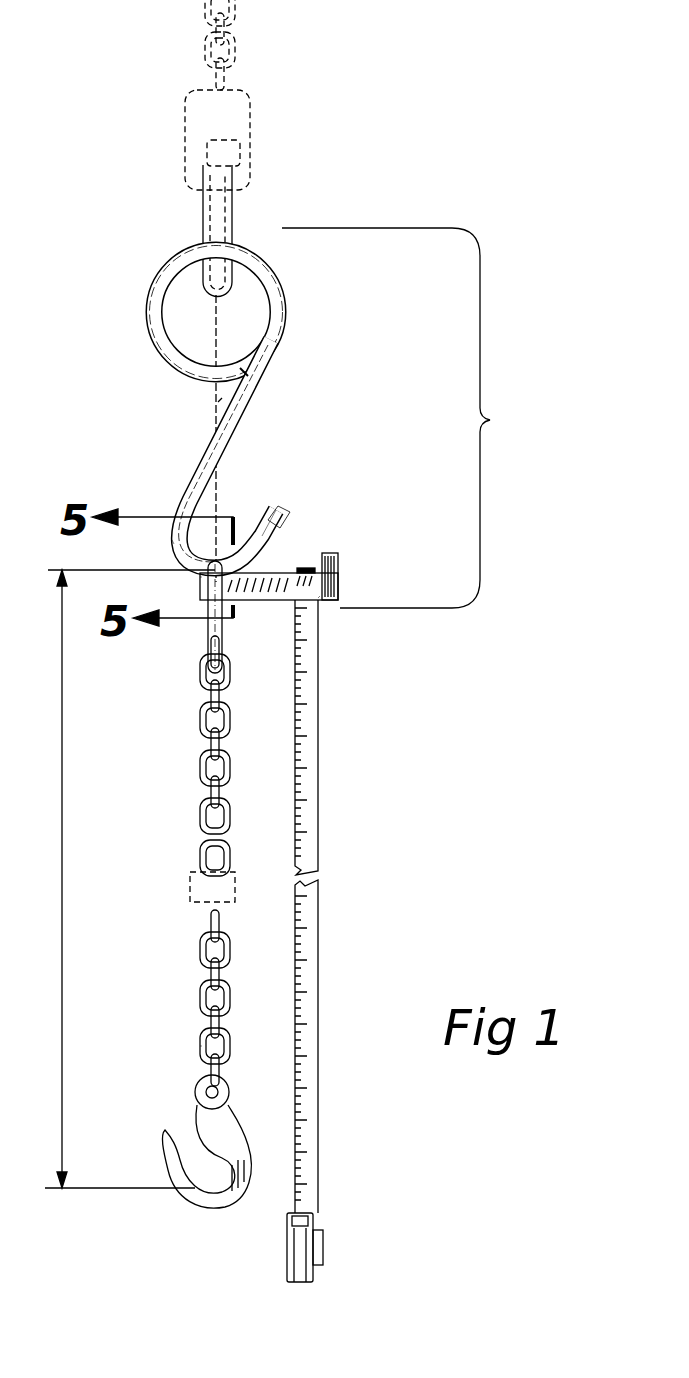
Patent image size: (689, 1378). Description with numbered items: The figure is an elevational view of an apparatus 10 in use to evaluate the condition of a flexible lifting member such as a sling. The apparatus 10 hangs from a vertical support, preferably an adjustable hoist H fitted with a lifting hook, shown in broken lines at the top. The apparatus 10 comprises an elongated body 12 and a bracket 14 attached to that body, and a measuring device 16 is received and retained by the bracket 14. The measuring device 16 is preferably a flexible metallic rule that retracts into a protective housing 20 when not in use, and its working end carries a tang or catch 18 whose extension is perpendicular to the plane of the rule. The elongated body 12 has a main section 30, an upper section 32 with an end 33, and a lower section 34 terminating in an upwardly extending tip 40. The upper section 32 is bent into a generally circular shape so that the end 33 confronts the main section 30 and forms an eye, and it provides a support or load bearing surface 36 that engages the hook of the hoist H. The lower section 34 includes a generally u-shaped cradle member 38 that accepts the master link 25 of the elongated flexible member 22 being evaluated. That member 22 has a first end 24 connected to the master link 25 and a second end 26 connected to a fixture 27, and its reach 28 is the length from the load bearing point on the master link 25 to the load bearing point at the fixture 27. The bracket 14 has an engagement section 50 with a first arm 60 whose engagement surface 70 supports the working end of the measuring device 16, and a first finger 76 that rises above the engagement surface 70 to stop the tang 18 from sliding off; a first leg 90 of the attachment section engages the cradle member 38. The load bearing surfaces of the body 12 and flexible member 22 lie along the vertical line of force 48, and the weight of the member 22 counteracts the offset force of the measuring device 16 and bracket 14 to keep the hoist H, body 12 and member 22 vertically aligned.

The hoist H is at (162, 124).
The apparatus 10 is at (520, 420).
The elongated body 12 is at (215, 415).
The bracket 14 is at (318, 588).
The measuring device 16 is at (323, 884).
The tang or catch 18 is at (306, 570).
The protective housing 20 is at (287, 1254).
The elongated flexible member 22 is at (168, 878).
The first end 24 is at (164, 922).
The master link 25 is at (206, 640).
The second end 26 is at (200, 1048).
The fixture 27 is at (156, 1170).
The reach 28 is at (127, 879).
The main section 30 is at (268, 396).
The upper section 32 is at (296, 268).
The end 33 is at (240, 388).
The lower section 34 is at (150, 556).
The support or load bearing surface 36 is at (220, 264).
The cradle member 38 is at (196, 586).
The tip 40 is at (269, 526).
The vertical line of force 48 is at (216, 400).
The engagement section 50 is at (358, 592).
The first arm 60 is at (321, 596).
The engagement surface 70 is at (276, 570).
The first finger 76 is at (336, 576).
The first leg 90 is at (236, 600).